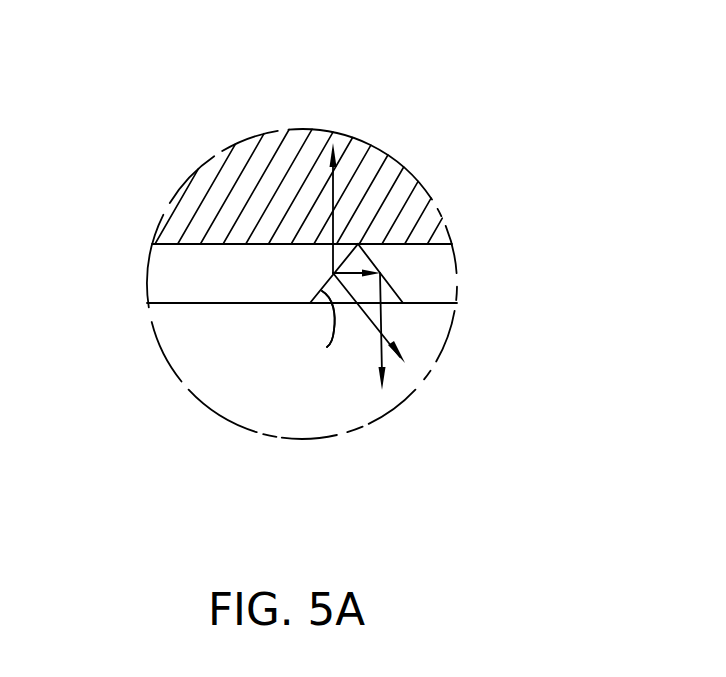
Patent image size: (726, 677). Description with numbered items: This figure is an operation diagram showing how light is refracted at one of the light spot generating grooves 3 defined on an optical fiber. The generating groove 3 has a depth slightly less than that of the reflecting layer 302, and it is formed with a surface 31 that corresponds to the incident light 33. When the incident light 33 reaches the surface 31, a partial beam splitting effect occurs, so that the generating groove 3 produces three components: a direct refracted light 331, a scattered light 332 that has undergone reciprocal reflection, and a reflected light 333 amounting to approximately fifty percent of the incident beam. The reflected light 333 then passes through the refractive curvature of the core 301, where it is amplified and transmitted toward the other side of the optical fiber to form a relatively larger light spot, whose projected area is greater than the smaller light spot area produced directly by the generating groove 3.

The light spot generating groove 3 is at (327, 347).
The surface 31 is at (323, 292).
The incident light 33 is at (333, 274).
The core 301 is at (380, 182).
The reflecting layer 302 is at (428, 265).
The direct refracted light 331 is at (385, 339).
The scattered light 332 is at (383, 340).
The reflected light 333 is at (336, 165).